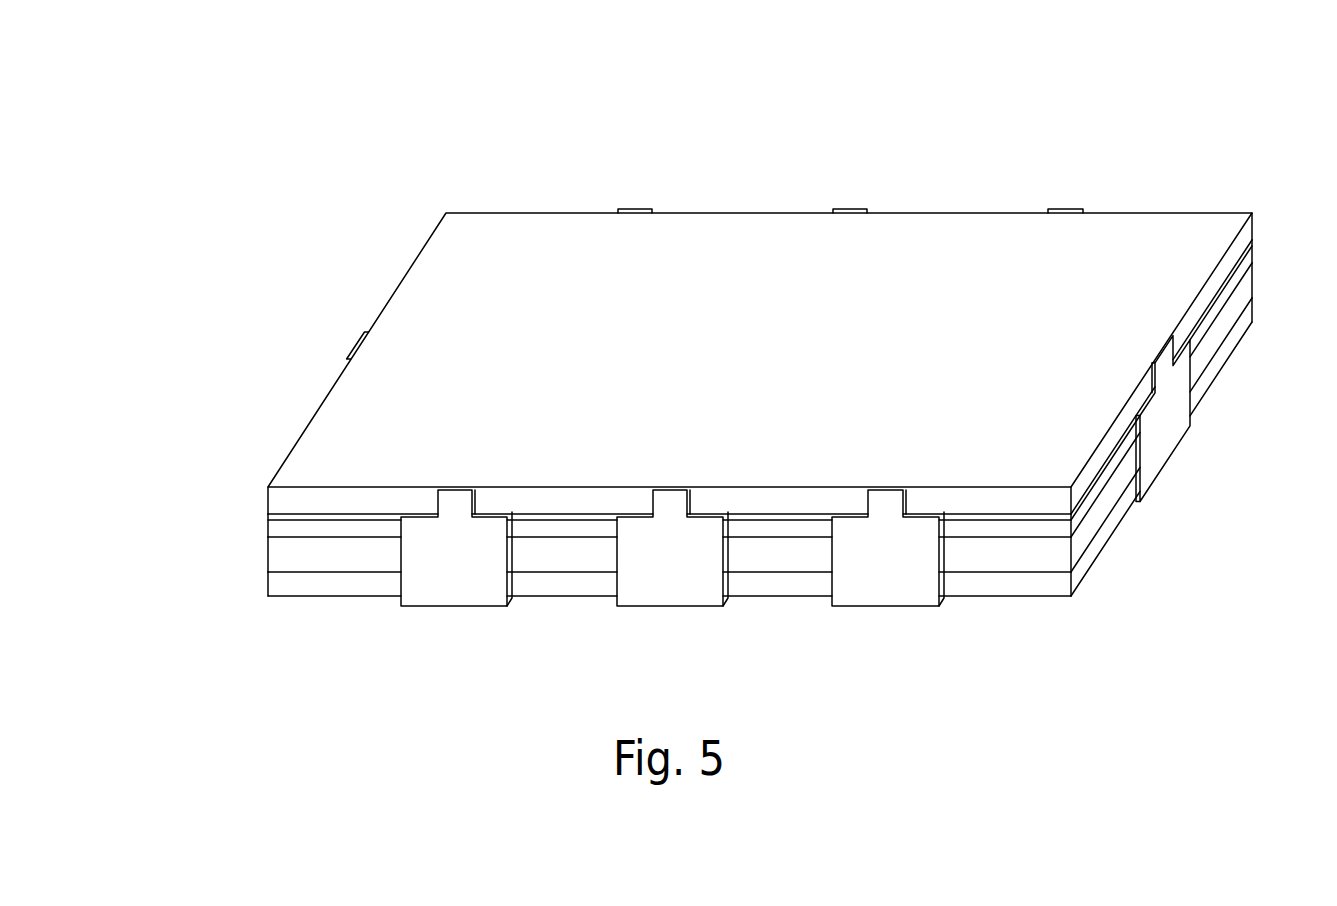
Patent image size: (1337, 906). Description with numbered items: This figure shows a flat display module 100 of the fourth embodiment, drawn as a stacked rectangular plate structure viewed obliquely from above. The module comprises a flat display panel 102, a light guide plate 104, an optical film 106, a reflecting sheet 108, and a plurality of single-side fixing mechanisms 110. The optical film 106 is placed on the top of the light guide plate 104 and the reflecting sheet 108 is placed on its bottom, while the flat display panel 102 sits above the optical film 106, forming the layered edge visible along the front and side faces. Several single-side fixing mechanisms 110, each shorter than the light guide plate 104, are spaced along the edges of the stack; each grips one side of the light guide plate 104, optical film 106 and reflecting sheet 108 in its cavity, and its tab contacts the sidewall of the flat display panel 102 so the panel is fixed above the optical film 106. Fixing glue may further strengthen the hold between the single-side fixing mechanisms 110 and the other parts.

The flat display module 100 is at (1157, 133).
The flat display panel 102 is at (762, 361).
The light guide plate 104 is at (285, 551).
The optical film 106 is at (277, 527).
The reflecting sheet 108 is at (278, 587).
The single-side fixing mechanism 110 is at (888, 586).